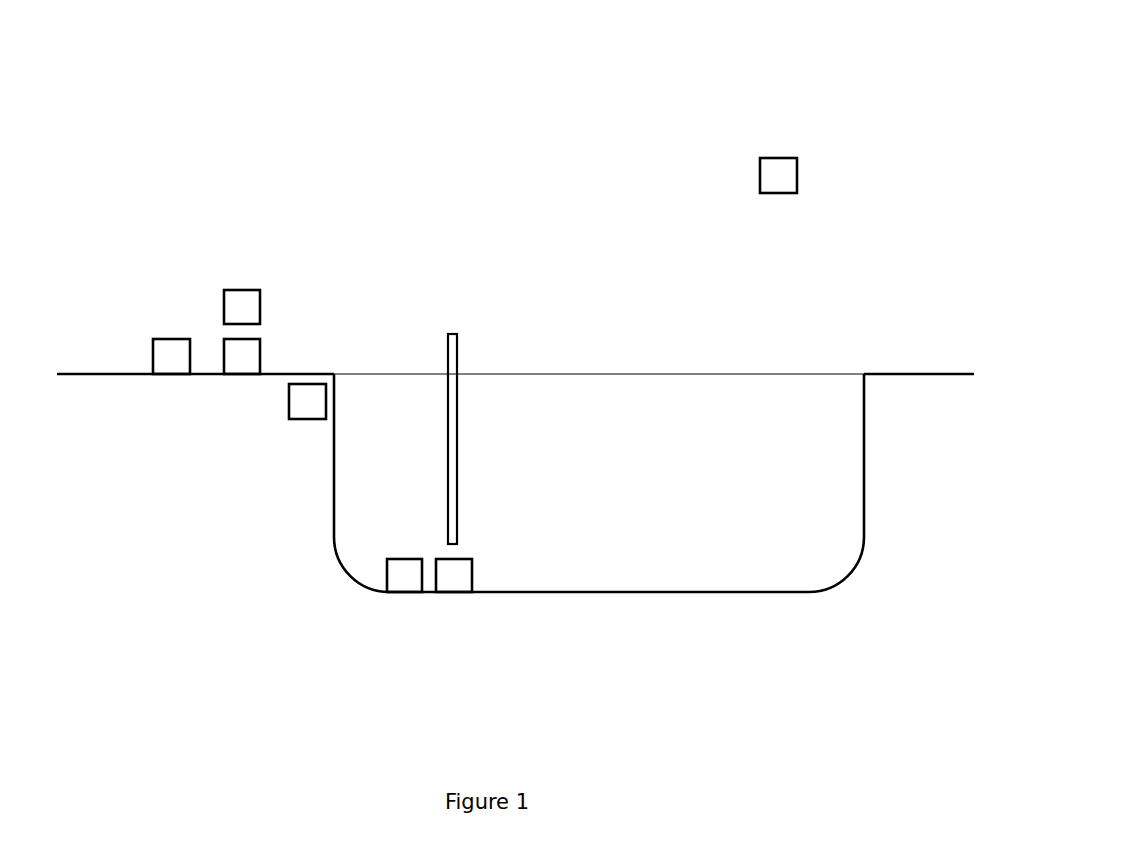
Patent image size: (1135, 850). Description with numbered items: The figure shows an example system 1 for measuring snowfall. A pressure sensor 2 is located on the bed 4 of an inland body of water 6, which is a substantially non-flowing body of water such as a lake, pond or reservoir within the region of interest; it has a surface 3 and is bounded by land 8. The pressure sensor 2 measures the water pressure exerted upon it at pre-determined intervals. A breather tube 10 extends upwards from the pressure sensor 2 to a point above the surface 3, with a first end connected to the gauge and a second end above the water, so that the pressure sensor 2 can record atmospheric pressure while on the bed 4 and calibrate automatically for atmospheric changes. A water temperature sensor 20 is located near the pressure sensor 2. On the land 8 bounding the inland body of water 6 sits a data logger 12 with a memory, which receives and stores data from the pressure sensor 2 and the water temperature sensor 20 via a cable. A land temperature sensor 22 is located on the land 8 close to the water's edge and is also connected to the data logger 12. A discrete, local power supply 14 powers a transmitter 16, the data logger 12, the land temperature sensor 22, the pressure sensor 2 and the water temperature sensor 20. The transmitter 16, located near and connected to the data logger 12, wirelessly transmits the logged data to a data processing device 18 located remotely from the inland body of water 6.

The system 1 is at (352, 227).
The pressure sensor 2 is at (453, 575).
The surface 3 is at (678, 373).
The bed 4 is at (645, 592).
The inland body of water 6 is at (706, 502).
The land 8 is at (103, 374).
The breather tube 10 is at (455, 390).
The data logger 12 is at (240, 352).
The local power supply 14 is at (240, 310).
The transmitter 16 is at (172, 363).
The data processing device 18 is at (770, 173).
The water temperature sensor 20 is at (403, 572).
The land temperature sensor 22 is at (303, 388).